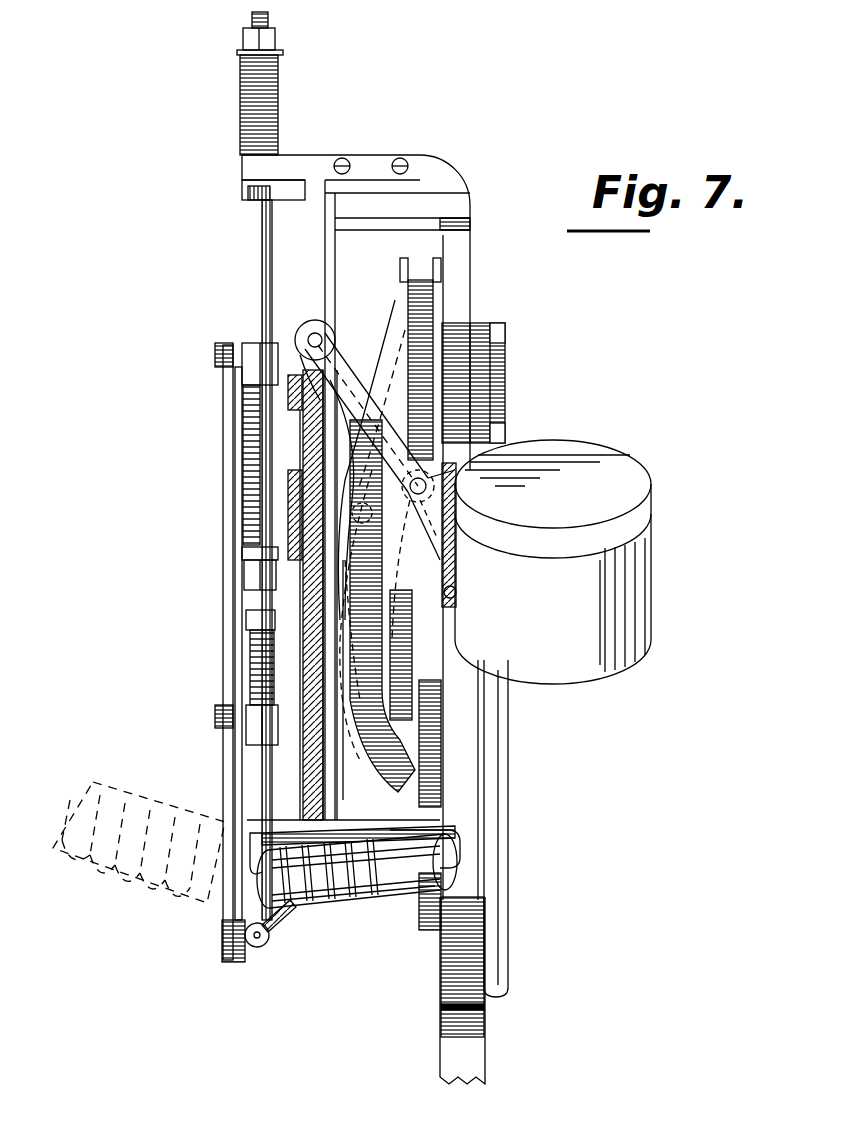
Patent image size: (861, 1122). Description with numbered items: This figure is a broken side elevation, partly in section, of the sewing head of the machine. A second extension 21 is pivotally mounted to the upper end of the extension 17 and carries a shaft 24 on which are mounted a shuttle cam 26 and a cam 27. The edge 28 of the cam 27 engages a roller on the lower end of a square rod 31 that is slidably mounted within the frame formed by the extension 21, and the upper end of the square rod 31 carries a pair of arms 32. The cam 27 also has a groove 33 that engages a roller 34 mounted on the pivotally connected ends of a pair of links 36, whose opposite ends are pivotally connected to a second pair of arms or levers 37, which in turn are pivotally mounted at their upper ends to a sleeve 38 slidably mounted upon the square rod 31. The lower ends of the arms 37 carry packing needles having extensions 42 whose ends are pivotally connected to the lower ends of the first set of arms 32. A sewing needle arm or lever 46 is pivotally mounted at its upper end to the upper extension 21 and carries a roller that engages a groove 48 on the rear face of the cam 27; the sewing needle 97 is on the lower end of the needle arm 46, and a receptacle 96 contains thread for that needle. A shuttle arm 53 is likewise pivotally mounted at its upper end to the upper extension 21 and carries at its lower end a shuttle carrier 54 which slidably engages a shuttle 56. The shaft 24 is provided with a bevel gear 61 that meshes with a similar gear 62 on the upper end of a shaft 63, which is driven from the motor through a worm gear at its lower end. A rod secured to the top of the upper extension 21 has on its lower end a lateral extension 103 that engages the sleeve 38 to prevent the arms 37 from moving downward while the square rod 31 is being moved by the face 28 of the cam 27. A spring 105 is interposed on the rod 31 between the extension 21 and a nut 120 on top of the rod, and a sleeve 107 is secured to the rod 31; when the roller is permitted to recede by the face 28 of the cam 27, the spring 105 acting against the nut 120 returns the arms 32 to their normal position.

The extension 17 is at (470, 1052).
The second extension 21 is at (480, 350).
The shaft 24 is at (290, 528).
The shuttle cam 26 is at (433, 298).
The cam 27 is at (303, 482).
The edge 28 is at (300, 377).
The square rod 31 is at (305, 652).
The arms 32 is at (240, 445).
The groove 33 is at (290, 395).
The roller 34 is at (275, 742).
The links 36 is at (225, 720).
The arms or levers 37 is at (228, 648).
The sleeve 38 is at (250, 582).
The extensions 42 is at (224, 937).
The sewing needle arm or lever 46 is at (332, 328).
The groove 48 is at (322, 762).
The shuttle arm 53 is at (440, 732).
The shuttle carrier 54 is at (345, 905).
The shuttle 56 is at (418, 898).
The bevel gear 61 is at (456, 560).
The gear 62 is at (456, 592).
The shaft 63 is at (508, 843).
The receptacle 96 is at (553, 562).
The sewing needle 97 is at (258, 948).
The lateral extension 103 is at (250, 560).
The spring 105 is at (240, 100).
The sleeve 107 is at (250, 360).
The nut 120 is at (243, 40).